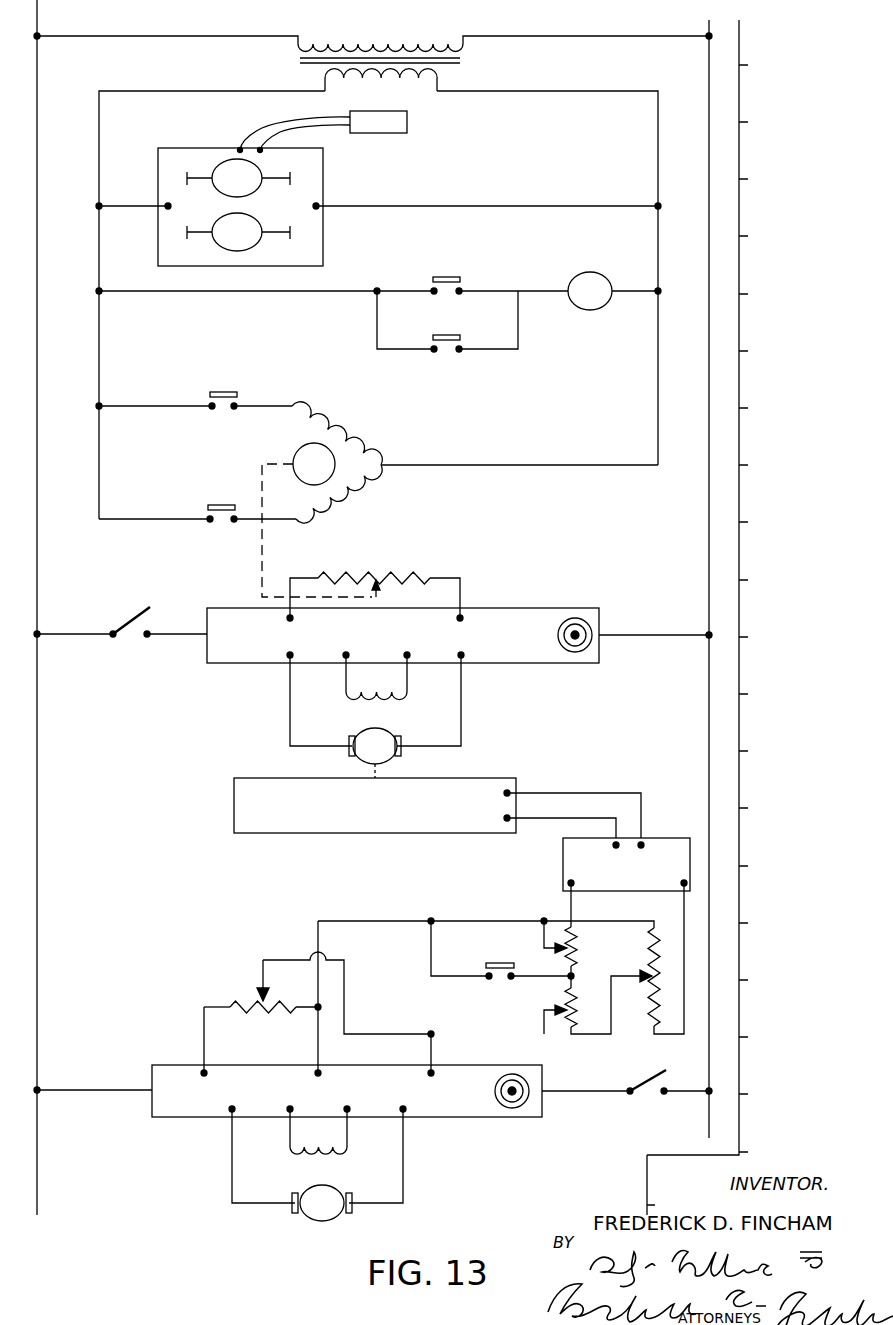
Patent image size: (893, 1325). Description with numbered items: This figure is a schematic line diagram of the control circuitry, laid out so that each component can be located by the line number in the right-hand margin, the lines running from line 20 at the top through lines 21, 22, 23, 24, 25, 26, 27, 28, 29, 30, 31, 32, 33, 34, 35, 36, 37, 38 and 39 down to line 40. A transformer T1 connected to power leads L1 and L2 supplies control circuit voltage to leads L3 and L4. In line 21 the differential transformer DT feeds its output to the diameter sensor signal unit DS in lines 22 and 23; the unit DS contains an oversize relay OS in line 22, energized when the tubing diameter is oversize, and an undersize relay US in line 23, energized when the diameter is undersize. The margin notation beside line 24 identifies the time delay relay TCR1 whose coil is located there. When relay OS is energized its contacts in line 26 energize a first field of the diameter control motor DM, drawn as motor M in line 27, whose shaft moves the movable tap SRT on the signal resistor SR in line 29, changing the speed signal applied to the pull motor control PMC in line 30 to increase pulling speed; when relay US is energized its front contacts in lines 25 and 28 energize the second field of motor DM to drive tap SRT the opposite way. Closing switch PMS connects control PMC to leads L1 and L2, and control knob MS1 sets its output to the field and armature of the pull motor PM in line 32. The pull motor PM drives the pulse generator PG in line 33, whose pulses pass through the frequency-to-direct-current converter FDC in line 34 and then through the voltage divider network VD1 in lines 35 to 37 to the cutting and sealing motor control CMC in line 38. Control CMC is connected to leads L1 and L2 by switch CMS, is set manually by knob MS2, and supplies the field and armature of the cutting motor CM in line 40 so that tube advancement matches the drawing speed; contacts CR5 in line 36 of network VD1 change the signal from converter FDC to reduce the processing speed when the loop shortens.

The power lead L1 is at (37, 14).
The power lead L2 is at (705, 20).
The transformer T1 is at (294, 65).
The control circuit lead L3 is at (99, 108).
The control circuit lead L4 is at (658, 118).
The differential transformer DT is at (407, 122).
The diameter sensor signal unit DS is at (325, 170).
The oversize relay OS is at (238, 178).
The undersize relay US is at (238, 232).
The time delay relay TCR1 is at (378, 306).
The diameter control motor DM is at (293, 462).
The motor M is at (314, 464).
The signal resistor SR is at (383, 577).
The movable tap SRT is at (380, 597).
The switch PMS is at (130, 621).
The pull motor control PMC is at (520, 665).
The control knob MS1 is at (590, 645).
The pull motor PM is at (375, 716).
The pulse generator PG is at (234, 798).
The frequency-to-direct-current converter FDC is at (563, 862).
The voltage divider network VD1 is at (624, 962).
The relay contacts CR5 is at (501, 950).
The cutting and sealing motor control CMC is at (456, 1118).
The cutting and sealing motor CM is at (317, 1165).
The manual control knob MS2 is at (528, 1100).
The switch CMS is at (648, 1078).
The line number 20 is at (760, 48).
The line number 21 is at (760, 99).
The line number 22 is at (801, 157).
The line number 23 is at (800, 214).
The line number 24 is at (803, 271).
The line number 25 is at (760, 328).
The line number 26 is at (760, 385).
The line number 27 is at (760, 442).
The line number 28 is at (760, 499).
The line number 29 is at (760, 557).
The line number 30 is at (760, 614).
The line number 31 is at (760, 671).
The line number 32 is at (760, 728).
The line number 33 is at (760, 785).
The line number 34 is at (760, 843).
The line number 35 is at (760, 900).
The line number 36 is at (760, 957).
The line number 37 is at (760, 1014).
The line number 38 is at (760, 1071).
The line number 39 is at (714, 1129).
The line number 40 is at (666, 1186).